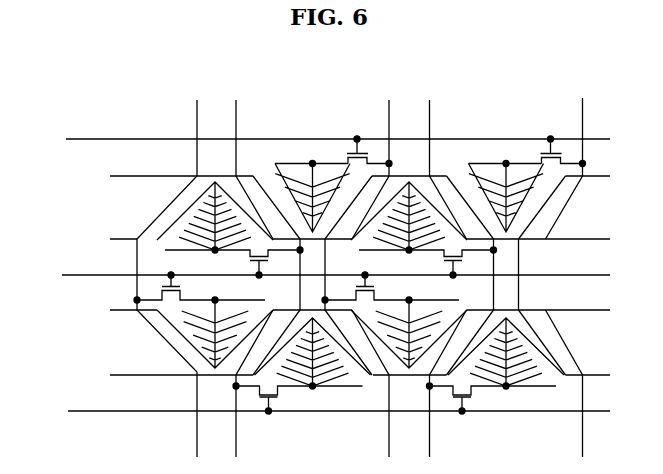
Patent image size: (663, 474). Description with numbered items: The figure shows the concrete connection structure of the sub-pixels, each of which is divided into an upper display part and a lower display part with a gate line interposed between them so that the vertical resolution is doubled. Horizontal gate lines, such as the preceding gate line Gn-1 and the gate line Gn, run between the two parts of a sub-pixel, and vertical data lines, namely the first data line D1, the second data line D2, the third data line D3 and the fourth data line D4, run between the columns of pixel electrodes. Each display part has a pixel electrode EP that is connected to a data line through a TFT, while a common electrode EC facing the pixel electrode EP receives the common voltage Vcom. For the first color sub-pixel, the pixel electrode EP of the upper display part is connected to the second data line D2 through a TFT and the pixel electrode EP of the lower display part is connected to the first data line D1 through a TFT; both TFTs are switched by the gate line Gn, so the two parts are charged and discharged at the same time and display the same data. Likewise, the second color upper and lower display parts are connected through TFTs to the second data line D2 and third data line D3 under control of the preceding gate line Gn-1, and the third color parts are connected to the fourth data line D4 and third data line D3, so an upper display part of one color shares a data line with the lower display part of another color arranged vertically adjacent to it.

The (n−1)-th gate line Gn-1 is at (319, 139).
The n-th gate line Gn is at (323, 275).
The common voltage Vcom is at (339, 275).
The first data line D1 is at (169, 270).
The second data line D2 is at (249, 270).
The third data line D3 is at (373, 270).
The fourth data line D4 is at (443, 270).
The thin film transistor TFT is at (339, 148).
The pixel electrode EP is at (531, 168).
The common electrode EC is at (548, 198).